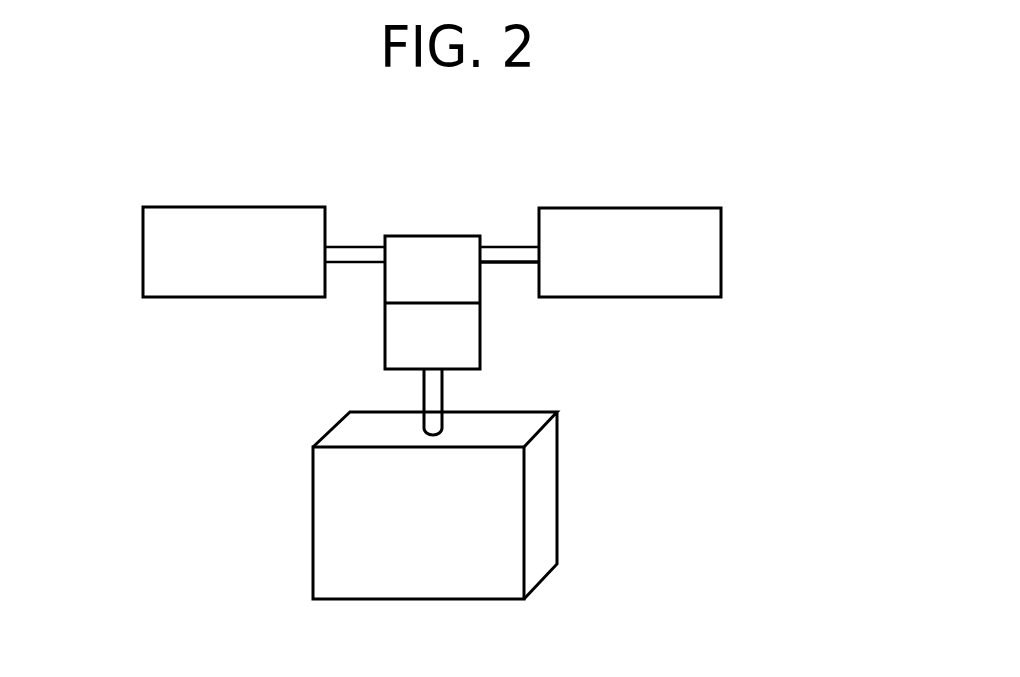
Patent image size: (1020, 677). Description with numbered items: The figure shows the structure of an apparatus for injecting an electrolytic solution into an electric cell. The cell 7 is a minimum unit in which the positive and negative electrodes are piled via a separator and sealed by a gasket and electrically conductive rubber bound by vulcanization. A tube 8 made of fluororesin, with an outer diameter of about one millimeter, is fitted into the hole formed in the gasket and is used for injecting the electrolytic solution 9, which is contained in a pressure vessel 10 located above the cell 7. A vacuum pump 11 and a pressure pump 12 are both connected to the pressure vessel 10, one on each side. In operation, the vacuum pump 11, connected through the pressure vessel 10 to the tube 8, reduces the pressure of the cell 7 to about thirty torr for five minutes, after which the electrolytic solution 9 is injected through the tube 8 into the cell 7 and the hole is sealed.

The electric cell 7 is at (550, 507).
The tube used for injecting an electrolytic solution 8 is at (435, 400).
The electrolytic solution 9 is at (472, 332).
The pressure vessel 10 is at (432, 236).
The vacuum pump 11 is at (197, 207).
The pressure pump 12 is at (662, 208).